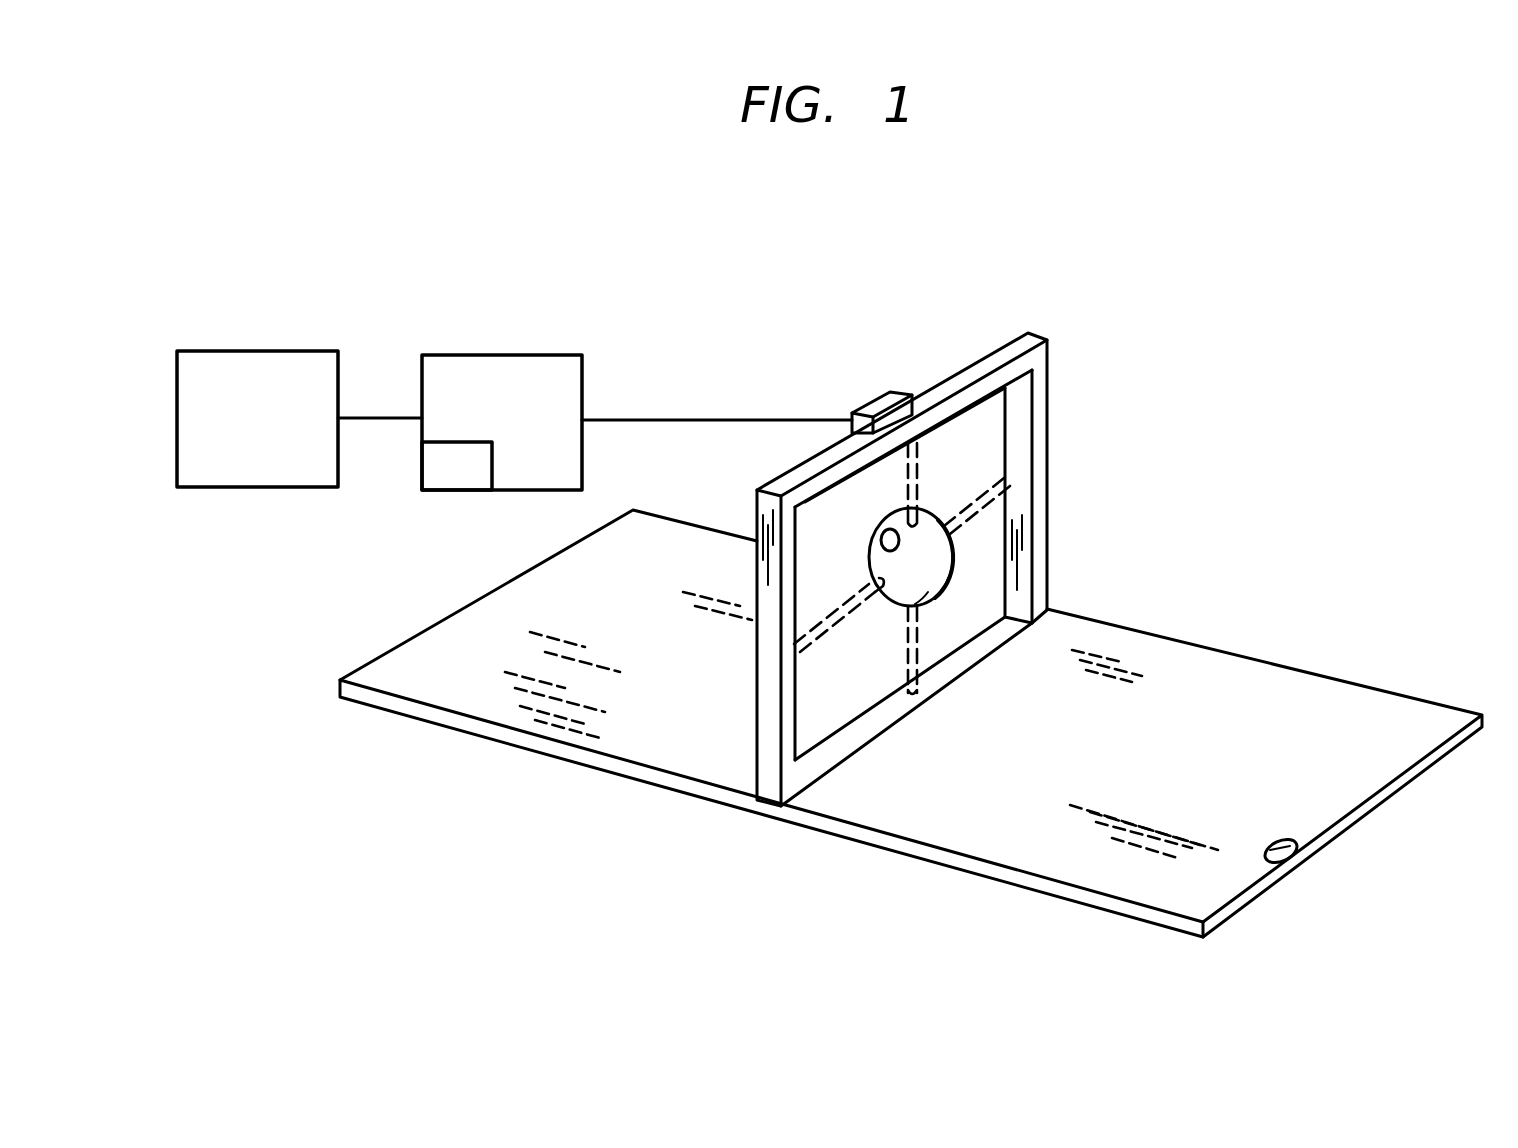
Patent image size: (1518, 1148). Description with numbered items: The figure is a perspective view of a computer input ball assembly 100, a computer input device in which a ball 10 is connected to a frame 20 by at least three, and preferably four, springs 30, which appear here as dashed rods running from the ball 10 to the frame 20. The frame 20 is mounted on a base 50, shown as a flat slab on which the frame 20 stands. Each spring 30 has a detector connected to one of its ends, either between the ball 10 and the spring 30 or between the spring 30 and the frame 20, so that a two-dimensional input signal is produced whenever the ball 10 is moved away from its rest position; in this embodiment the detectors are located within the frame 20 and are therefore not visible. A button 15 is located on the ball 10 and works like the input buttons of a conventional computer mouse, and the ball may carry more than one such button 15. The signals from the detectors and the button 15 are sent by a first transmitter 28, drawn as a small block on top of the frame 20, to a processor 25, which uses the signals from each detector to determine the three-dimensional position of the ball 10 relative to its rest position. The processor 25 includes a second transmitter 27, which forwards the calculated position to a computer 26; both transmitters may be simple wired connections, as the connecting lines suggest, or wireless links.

The computer input ball assembly 100 is at (1183, 328).
The base 50 is at (1280, 690).
The frame 20 is at (1009, 343).
The first transmitter 28 is at (879, 390).
The computer 26 is at (260, 352).
The processor 25 is at (498, 355).
The second transmitter 27 is at (421, 460).
The springs 30 is at (920, 487).
The ball 10 is at (935, 592).
The button 15 is at (882, 542).